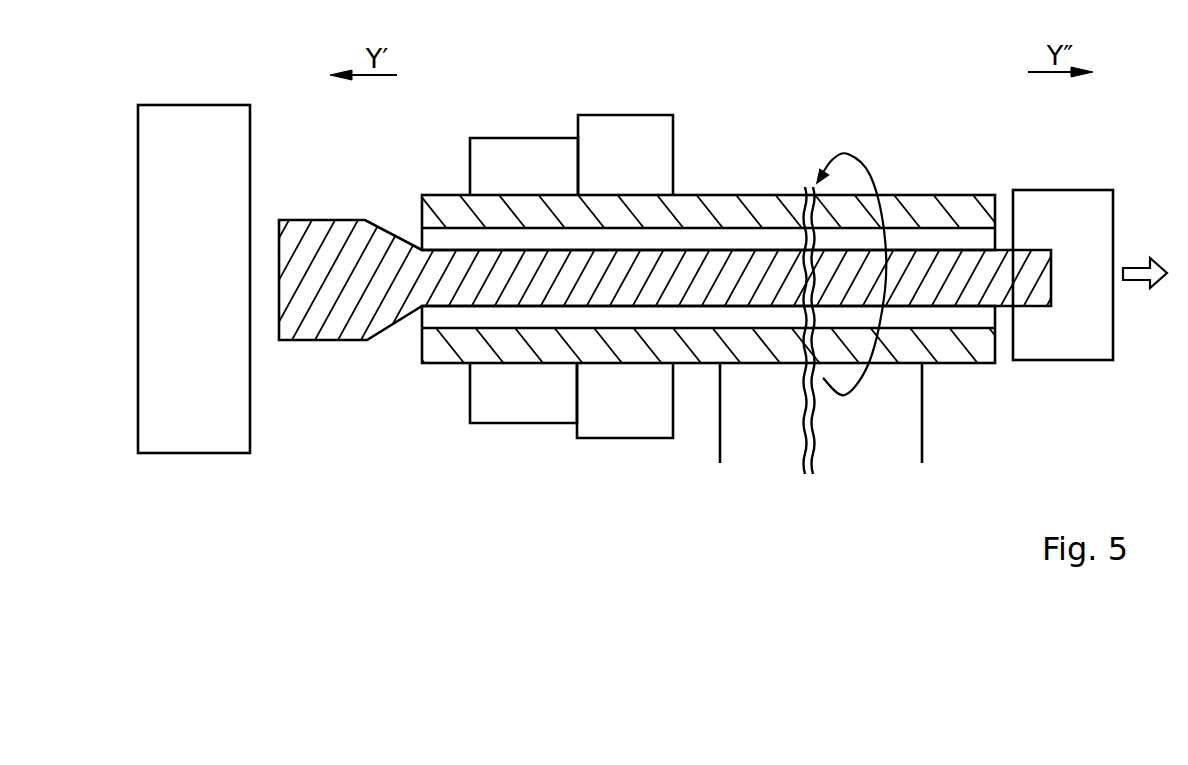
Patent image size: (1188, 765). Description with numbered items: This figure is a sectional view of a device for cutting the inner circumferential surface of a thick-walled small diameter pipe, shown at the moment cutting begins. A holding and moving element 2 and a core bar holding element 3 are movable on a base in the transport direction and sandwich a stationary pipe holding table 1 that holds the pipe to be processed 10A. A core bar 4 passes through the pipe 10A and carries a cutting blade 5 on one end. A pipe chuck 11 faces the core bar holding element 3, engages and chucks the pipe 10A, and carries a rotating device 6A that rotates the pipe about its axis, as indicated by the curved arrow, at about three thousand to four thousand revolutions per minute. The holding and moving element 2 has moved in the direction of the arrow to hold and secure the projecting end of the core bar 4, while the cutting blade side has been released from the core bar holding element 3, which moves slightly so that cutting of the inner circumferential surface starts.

The pipe holding table 1 is at (909, 425).
The holding and moving element 2 is at (1068, 210).
The core bar holding element 3 is at (197, 118).
The core bar 4 is at (555, 262).
The cutting blade 5 is at (330, 232).
The rotating device 6A is at (490, 153).
The pipe to be processed 10A is at (948, 200).
The pipe chuck 11 is at (624, 140).